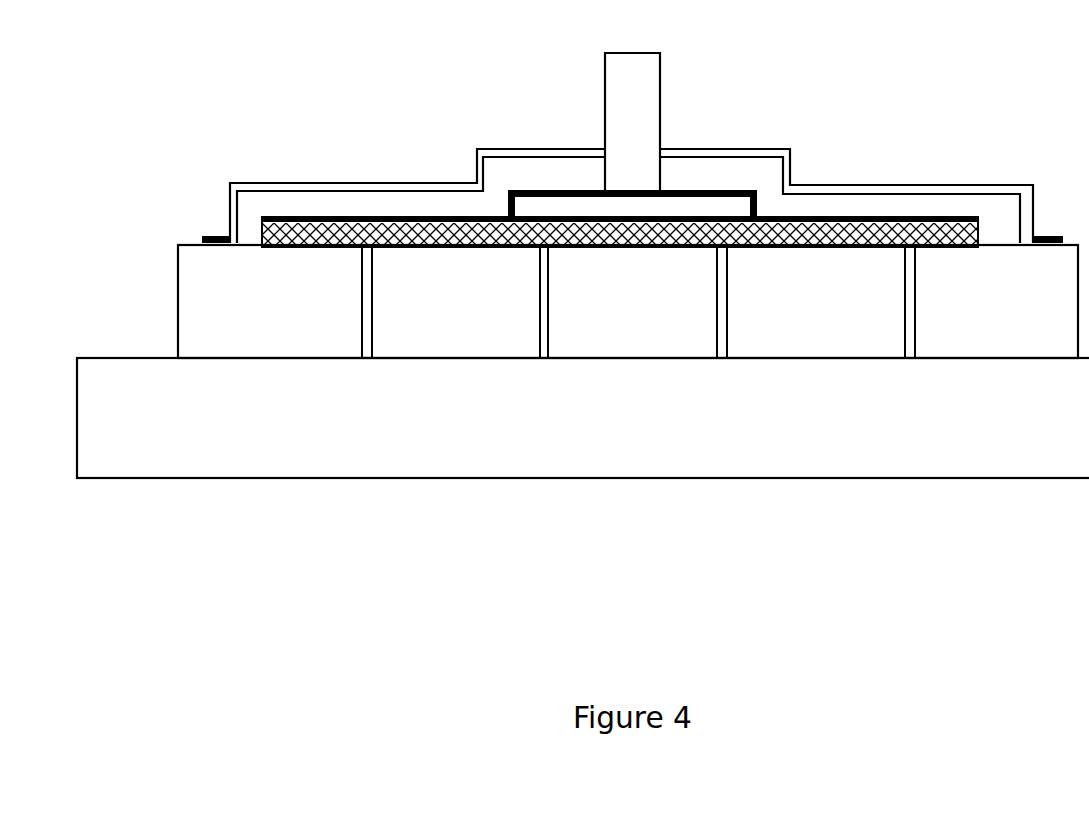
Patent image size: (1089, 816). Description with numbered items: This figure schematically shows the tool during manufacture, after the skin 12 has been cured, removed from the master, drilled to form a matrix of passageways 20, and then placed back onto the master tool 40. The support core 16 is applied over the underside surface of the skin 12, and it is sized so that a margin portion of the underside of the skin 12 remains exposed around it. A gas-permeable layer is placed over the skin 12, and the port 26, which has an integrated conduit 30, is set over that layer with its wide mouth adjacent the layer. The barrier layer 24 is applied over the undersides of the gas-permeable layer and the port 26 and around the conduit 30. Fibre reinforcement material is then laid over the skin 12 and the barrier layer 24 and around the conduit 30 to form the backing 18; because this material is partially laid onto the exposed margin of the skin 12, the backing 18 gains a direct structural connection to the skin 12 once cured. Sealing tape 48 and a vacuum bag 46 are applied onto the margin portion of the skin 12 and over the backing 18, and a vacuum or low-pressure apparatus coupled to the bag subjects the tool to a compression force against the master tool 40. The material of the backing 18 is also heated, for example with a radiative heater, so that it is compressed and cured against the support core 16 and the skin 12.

The skin 12 is at (202, 298).
The support core 16 is at (757, 197).
The backing 18 is at (987, 210).
The passageways 20 is at (715, 328).
The barrier layer 24 is at (540, 193).
The port 26 is at (697, 207).
The conduit 30 is at (640, 95).
The master tool 40 is at (872, 452).
The vacuum bag 46 is at (273, 182).
The sealing tape 48 is at (217, 237).